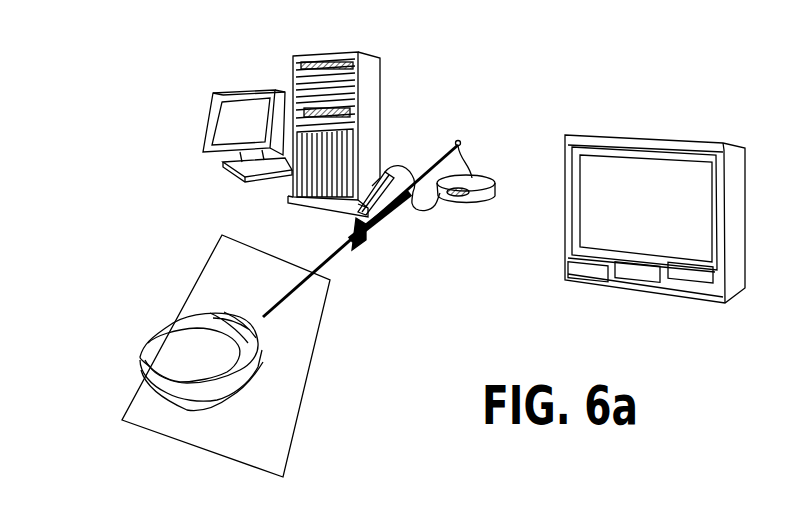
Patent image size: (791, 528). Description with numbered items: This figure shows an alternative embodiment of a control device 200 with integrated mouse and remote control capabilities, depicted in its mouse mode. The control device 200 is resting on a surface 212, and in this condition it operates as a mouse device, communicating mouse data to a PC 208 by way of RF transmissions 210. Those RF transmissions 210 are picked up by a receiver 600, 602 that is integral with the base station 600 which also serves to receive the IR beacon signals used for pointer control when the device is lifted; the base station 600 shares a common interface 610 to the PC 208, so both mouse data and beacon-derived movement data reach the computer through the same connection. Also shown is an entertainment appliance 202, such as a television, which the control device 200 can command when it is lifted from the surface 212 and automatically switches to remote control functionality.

The control device 200 is at (150, 357).
The entertainment appliance 202 is at (628, 137).
The PC 208 is at (345, 56).
The RF transmissions 210 is at (377, 230).
The surface 212 is at (297, 427).
The base station 600 is at (487, 177).
The receiver 602 is at (458, 141).
The common interface 610 is at (397, 172).